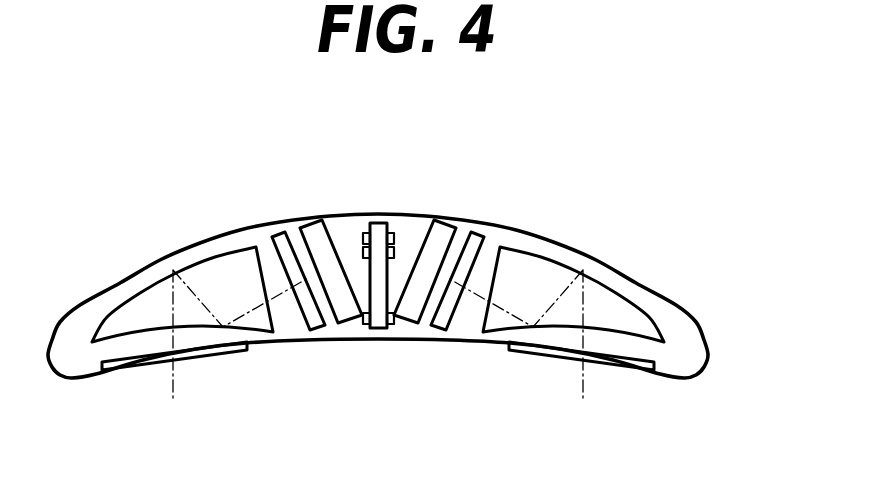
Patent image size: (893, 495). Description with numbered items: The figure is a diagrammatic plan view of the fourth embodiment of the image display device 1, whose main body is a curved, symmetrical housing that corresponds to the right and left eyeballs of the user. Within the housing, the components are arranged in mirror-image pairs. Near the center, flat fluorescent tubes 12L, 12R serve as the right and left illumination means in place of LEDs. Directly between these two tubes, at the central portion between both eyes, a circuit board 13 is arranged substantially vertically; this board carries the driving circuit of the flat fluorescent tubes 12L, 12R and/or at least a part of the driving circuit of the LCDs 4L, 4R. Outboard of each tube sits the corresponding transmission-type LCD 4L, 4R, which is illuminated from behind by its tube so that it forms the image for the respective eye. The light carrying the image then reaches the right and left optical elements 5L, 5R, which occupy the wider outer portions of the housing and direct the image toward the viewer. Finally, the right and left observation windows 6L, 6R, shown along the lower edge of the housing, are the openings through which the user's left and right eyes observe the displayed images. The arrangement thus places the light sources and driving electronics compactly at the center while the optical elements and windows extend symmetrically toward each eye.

The image display device 1 is at (648, 257).
The left LCD 4L is at (277, 242).
The right LCD 4R is at (486, 232).
The left optical element 5L is at (138, 305).
The right optical element 5R is at (643, 327).
The left observation window 6L is at (137, 368).
The right observation window 6R is at (627, 368).
The left flat fluorescent tube 12L is at (325, 240).
The right flat fluorescent tube 12R is at (437, 233).
The circuit board 13 is at (378, 237).